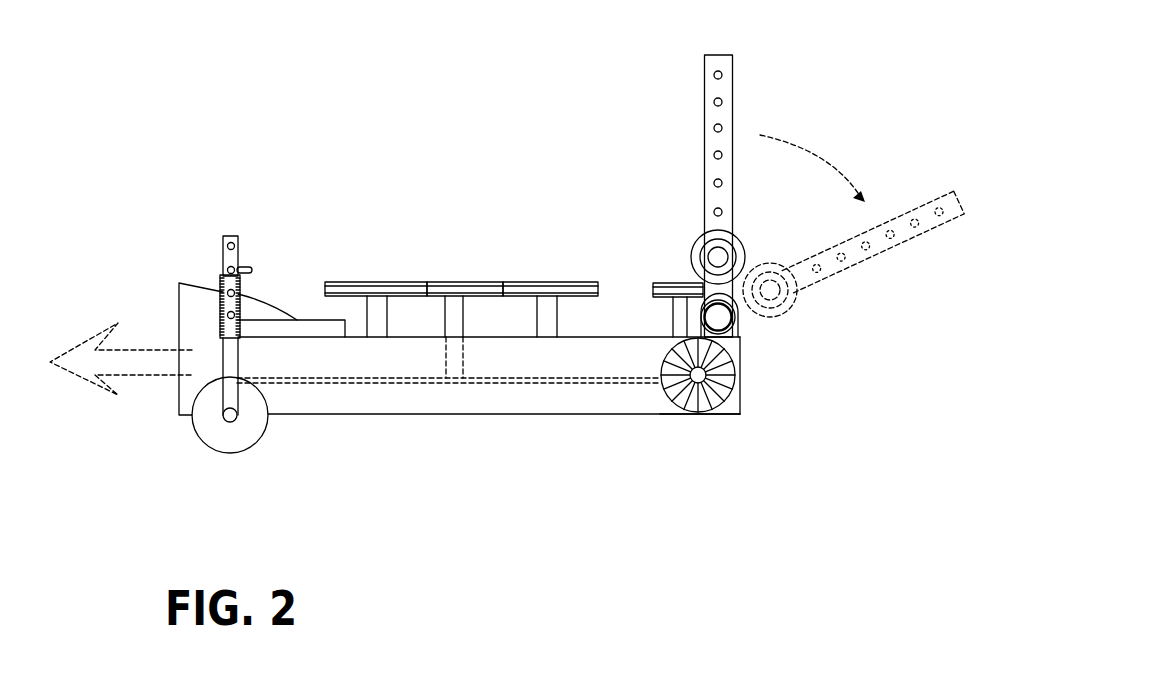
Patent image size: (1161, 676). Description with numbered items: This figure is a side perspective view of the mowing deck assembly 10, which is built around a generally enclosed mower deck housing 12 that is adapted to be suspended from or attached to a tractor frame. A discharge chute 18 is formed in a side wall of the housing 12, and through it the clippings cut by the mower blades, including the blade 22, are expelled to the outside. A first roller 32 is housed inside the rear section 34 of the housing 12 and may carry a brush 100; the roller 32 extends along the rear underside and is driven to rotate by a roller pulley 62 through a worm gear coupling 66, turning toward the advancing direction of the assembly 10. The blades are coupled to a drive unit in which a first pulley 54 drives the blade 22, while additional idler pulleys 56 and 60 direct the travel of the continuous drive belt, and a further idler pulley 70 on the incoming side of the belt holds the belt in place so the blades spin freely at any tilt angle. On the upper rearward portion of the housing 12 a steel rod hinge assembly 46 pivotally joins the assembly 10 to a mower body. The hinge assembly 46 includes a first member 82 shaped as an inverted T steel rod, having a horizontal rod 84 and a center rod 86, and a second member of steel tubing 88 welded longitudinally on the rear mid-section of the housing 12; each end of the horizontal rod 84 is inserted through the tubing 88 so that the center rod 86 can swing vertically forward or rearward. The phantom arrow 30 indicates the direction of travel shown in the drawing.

The mowing deck assembly 10 is at (482, 173).
The mower deck housing 12 is at (387, 414).
The discharge chute 18 is at (193, 293).
The mower blade 22 is at (297, 380).
The direction of travel 30 is at (85, 353).
The first roller 32 is at (723, 390).
The rear section 34 is at (740, 383).
The steel rod hinge assembly 46 is at (765, 123).
The first pulley 54 is at (470, 290).
The idler pulley 56 is at (350, 288).
The idler pulley 60 is at (528, 290).
The roller pulley 62 is at (668, 285).
The worm gear coupling 66 is at (677, 320).
The idler pulley 70 is at (767, 278).
The first member 82 is at (698, 80).
The horizontal rod 84 is at (722, 319).
The center rod 86 is at (958, 205).
The steel tubing 88 is at (740, 318).
The brush 100 is at (697, 408).